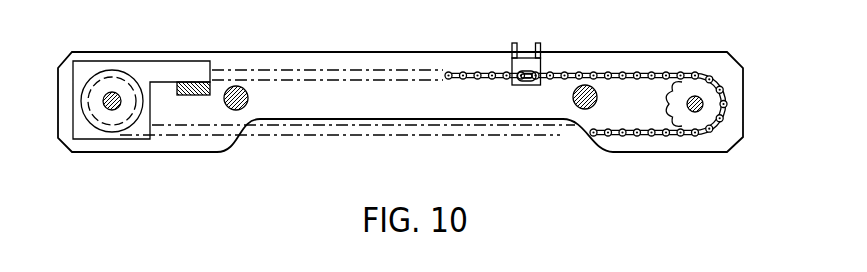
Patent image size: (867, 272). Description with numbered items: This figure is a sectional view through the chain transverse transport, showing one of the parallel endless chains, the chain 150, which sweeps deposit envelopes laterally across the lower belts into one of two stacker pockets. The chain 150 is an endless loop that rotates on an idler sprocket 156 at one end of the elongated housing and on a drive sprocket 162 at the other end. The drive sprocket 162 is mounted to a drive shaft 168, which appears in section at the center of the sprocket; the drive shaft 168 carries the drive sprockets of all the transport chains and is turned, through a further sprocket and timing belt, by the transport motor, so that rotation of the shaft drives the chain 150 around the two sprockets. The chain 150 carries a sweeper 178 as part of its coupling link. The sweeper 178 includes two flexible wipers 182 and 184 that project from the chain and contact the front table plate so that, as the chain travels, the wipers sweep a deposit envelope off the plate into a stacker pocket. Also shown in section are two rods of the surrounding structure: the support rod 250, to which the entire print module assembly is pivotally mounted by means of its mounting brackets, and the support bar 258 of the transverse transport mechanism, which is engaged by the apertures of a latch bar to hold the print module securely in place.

The endless chain 150 is at (453, 80).
The idler sprocket 156 is at (120, 134).
The drive sprocket 162 is at (668, 103).
The drive shaft 168 is at (703, 102).
The sweeper 178 is at (513, 86).
The flexible wiper 182 is at (512, 44).
The flexible wiper 184 is at (542, 50).
The support rod 250 is at (248, 100).
The support bar 258 is at (573, 97).